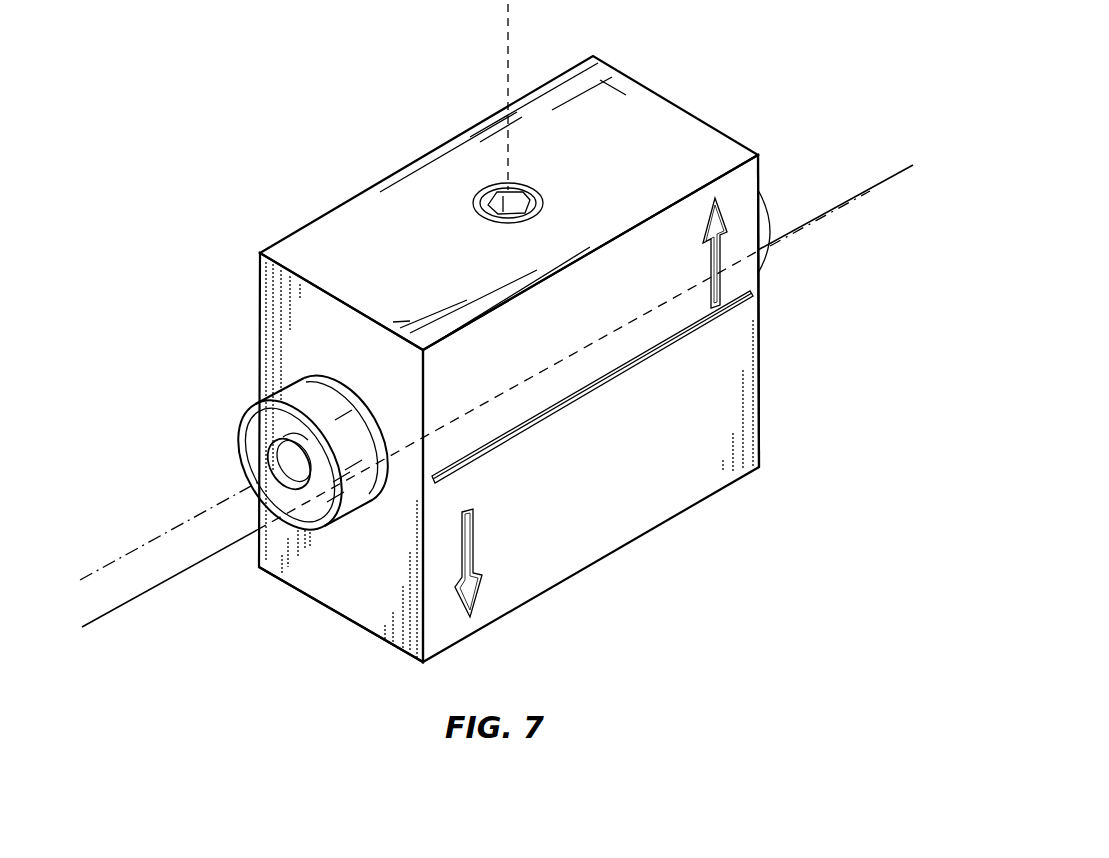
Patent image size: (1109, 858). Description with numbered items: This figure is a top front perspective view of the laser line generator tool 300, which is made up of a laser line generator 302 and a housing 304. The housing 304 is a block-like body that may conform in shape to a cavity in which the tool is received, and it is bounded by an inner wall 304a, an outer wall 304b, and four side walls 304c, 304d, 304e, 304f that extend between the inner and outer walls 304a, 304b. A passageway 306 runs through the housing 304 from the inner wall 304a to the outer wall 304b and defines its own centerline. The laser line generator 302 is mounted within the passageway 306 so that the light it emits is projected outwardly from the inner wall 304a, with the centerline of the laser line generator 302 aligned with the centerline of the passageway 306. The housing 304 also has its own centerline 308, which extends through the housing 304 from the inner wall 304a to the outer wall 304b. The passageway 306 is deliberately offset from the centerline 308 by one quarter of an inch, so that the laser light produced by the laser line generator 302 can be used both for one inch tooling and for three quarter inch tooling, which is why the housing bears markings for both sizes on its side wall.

The laser line generator tool 300 is at (244, 196).
The laser line generator 302 is at (282, 446).
The housing 304 is at (615, 533).
The inner wall 304a is at (383, 602).
The outer wall 304b is at (760, 357).
The side wall 304c is at (320, 607).
The side wall 304d is at (687, 473).
The side wall 304e is at (665, 137).
The side wall 304f is at (365, 190).
The passageway 306 is at (323, 373).
The centerline 308 is at (163, 582).